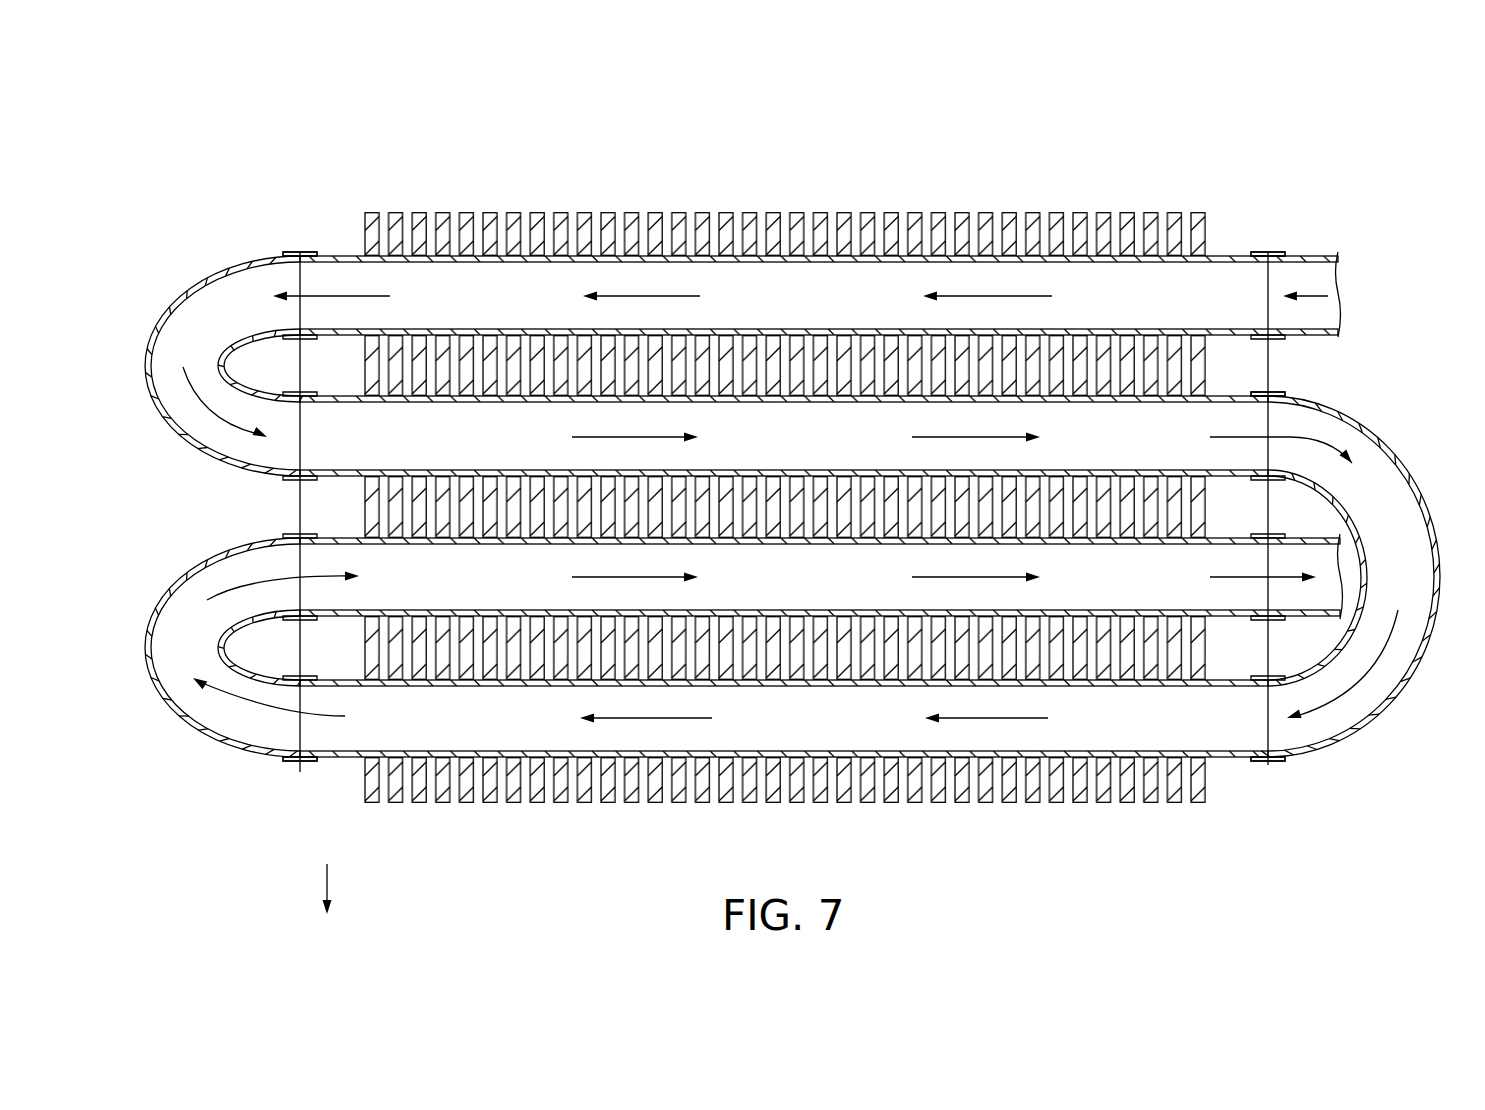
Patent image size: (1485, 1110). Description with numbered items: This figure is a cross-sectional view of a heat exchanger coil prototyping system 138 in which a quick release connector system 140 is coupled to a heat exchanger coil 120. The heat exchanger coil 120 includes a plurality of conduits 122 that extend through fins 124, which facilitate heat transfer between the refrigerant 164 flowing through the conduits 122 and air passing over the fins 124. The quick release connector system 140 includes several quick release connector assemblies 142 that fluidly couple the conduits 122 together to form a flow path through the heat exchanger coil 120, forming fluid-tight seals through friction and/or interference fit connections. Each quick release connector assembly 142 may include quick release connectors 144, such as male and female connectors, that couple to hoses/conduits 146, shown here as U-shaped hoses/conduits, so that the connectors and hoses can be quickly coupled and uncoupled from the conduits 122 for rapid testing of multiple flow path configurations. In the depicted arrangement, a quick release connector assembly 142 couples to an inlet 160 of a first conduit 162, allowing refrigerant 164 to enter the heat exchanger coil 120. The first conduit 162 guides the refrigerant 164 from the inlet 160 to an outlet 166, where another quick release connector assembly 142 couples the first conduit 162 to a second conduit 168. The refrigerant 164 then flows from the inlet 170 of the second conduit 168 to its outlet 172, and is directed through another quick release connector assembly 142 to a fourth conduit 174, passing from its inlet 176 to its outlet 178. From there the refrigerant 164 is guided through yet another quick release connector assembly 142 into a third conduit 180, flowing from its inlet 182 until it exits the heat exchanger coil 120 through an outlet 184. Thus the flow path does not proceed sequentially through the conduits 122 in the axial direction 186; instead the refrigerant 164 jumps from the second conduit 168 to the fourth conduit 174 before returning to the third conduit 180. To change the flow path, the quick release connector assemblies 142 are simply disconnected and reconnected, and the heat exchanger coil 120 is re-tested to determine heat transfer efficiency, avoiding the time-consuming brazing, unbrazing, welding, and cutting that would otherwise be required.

The heat exchanger coil 120 is at (1033, 822).
The conduits 122 is at (438, 182).
The fins 124 is at (583, 212).
The heat exchanger coil prototyping system 138 is at (1237, 137).
The quick release connector system 140 is at (247, 805).
The quick release connector assemblies 142 is at (188, 283).
The quick release connectors 144 is at (1262, 395).
The hoses/conduits 146 is at (147, 372).
The inlet 160 is at (1222, 255).
The first conduit 162 is at (665, 256).
The refrigerant 164 is at (1020, 297).
The outlet 166 is at (340, 255).
The second conduit 168 is at (432, 476).
The inlet 170 is at (330, 470).
The outlet 172 is at (1228, 395).
The fourth conduit 174 is at (760, 757).
The inlet 176 is at (1225, 757).
The outlet 178 is at (345, 757).
The third conduit 180 is at (455, 616).
The inlet 182 is at (350, 618).
The outlet 184 is at (1225, 536).
The axial direction 186 is at (327, 885).